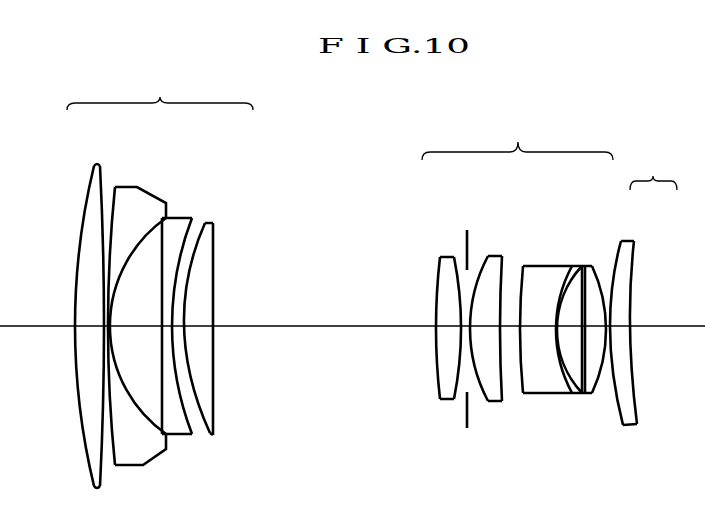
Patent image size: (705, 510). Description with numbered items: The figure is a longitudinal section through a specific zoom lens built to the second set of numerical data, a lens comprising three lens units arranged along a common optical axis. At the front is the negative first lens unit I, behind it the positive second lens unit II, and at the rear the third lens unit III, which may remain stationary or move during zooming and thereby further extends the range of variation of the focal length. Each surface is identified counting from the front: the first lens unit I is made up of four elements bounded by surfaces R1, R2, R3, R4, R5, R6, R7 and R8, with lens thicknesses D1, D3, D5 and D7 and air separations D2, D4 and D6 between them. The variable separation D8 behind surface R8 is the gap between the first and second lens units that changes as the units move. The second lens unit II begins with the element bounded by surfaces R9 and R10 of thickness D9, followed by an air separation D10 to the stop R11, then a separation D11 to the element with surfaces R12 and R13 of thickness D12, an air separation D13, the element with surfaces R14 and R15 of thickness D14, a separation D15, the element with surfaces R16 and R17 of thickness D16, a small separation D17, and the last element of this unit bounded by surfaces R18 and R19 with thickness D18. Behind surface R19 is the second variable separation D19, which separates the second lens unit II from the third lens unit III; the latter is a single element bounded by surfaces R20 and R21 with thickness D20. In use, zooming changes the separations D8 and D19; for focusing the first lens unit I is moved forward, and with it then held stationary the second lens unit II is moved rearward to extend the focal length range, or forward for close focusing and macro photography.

The first lens unit I is at (160, 89).
The second lens unit II is at (517, 138).
The third lens unit III is at (653, 170).
The first lens surface R1 is at (91, 181).
The second lens surface R2 is at (100, 167).
The third lens surface R3 is at (115, 184).
The fourth lens surface R4 is at (148, 233).
The fifth lens surface R5 is at (166, 216).
The sixth lens surface R6 is at (188, 217).
The seventh lens surface R7 is at (205, 222).
The eighth lens surface R8 is at (215, 231).
The ninth lens surface R9 is at (434, 268).
The tenth lens surface R10 is at (451, 266).
The stop R11 is at (467, 239).
The twelfth lens surface R12 is at (486, 263).
The thirteenth lens surface R13 is at (500, 265).
The fourteenth lens surface R14 is at (523, 264).
The fifteenth lens surface R15 is at (542, 265).
The sixteenth lens surface R16 is at (555, 265).
The seventeenth lens surface R17 is at (573, 265).
The eighteenth lens surface R18 is at (586, 265).
The nineteenth lens surface R19 is at (597, 265).
The twentieth lens surface R20 is at (628, 241).
The twenty-first lens surface R21 is at (640, 244).
The first lens thickness D1 is at (90, 330).
The second air separation D2 is at (102, 350).
The third lens thickness D3 is at (108, 380).
The fourth air separation D4 is at (145, 464).
The fifth lens thickness D5 is at (179, 436).
The sixth air separation D6 is at (200, 425).
The seventh lens thickness D7 is at (212, 360).
The eighth air separation D8 is at (324, 328).
The ninth lens thickness D9 is at (450, 330).
The tenth air separation D10 is at (462, 407).
The eleventh air separation D11 is at (472, 413).
The twelfth lens thickness D12 is at (490, 401).
The thirteenth air separation D13 is at (508, 385).
The fourteenth lens thickness D14 is at (537, 394).
The fifteenth air separation D15 is at (557, 407).
The sixteenth lens thickness D16 is at (572, 394).
The seventeenth air separation D17 is at (592, 394).
The eighteenth lens thickness D18 is at (602, 394).
The nineteenth air separation D19 is at (637, 408).
The twentieth lens thickness D20 is at (633, 363).